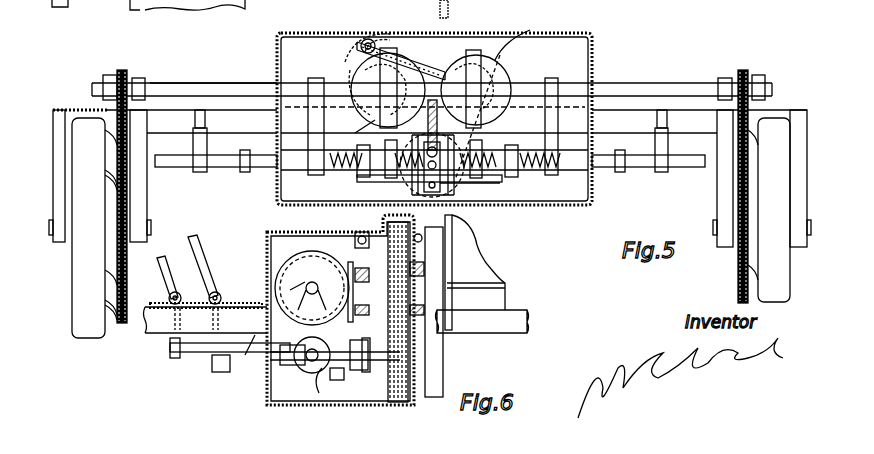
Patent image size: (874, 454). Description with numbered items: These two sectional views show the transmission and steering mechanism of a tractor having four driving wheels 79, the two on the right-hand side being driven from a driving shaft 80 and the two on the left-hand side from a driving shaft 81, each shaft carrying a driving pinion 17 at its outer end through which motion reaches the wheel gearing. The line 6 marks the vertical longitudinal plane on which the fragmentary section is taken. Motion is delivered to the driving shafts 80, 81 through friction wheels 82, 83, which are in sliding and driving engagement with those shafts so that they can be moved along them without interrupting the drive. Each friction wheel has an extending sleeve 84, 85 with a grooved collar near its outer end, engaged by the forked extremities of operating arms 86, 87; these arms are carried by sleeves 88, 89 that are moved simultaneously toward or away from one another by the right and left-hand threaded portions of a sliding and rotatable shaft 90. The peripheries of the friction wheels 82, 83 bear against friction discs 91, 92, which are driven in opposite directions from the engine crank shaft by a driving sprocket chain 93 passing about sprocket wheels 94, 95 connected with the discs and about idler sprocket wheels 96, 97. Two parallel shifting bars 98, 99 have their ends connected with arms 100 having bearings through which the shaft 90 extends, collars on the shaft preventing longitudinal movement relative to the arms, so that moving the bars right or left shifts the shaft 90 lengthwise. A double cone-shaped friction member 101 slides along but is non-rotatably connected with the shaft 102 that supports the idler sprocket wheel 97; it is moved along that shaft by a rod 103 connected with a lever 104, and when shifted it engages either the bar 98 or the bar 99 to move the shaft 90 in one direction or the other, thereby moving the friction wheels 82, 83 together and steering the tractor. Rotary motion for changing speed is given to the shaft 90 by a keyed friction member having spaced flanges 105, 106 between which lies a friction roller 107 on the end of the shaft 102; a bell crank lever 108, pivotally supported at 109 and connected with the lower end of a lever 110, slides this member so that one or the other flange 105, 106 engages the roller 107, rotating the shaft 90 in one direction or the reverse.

In FIG. 5, the section line 6 is at (440, 21).
In FIG. 5, the driving pinion 17 is at (120, 72).
In FIG. 5, the driving wheel 79 is at (80, 120).
In FIG. 5, the driving shaft 80 is at (712, 83).
In FIG. 5, the driving shaft 81 is at (178, 83).
In FIG. 6, the driving shaft 81 is at (310, 284).
In FIG. 5, the friction wheel 82 is at (500, 55).
In FIG. 5, the friction wheel 83 is at (416, 46).
In FIG. 6, the friction wheel 83 is at (310, 264).
In FIG. 5, the extending sleeve 84 is at (527, 83).
In FIG. 5, the extending sleeve 85 is at (353, 82).
In FIG. 5, the operating arm 86 is at (558, 122).
In FIG. 5, the operating arm 87 is at (308, 122).
In FIG. 5, the sleeve 88 is at (565, 172).
In FIG. 5, the sleeve 89 is at (262, 168).
In FIG. 5, the sliding and rotatable shaft 90 is at (648, 168).
In FIG. 6, the sliding and rotatable shaft 90 is at (285, 378).
In FIG. 5, the friction disc 91 is at (505, 60).
In FIG. 5, the friction disc 92 is at (372, 130).
In FIG. 6, the friction disc 92 is at (350, 264).
In FIG. 5, the driving sprocket chain 93 is at (478, 184).
In FIG. 6, the driving sprocket chain 93 is at (408, 267).
In FIG. 5, the sprocket wheel 94 is at (440, 135).
In FIG. 5, the sprocket wheel 95 is at (375, 112).
In FIG. 5, the idler sprocket wheel 96 is at (353, 45).
In FIG. 5, the idler sprocket wheel 97 is at (455, 186).
In FIG. 5, the shifting bar 98 is at (518, 170).
In FIG. 6, the shifting bar 98 is at (392, 400).
In FIG. 5, the shifting bar 99 is at (372, 180).
In FIG. 6, the shifting bar 99 is at (355, 376).
In FIG. 5, the arm 100 is at (358, 160).
In FIG. 6, the arm 100 is at (382, 343).
In FIG. 6, the double cone-shaped friction member 101 is at (358, 372).
In FIG. 6, the shaft 102 is at (392, 346).
In FIG. 6, the rod 103 is at (250, 358).
In FIG. 6, the lever 104 is at (165, 278).
In FIG. 5, the friction flange 105 is at (415, 184).
In FIG. 6, the friction flange 105 is at (310, 375).
In FIG. 5, the friction flange 106 is at (462, 140).
In FIG. 6, the friction roller 107 is at (326, 395).
In FIG. 6, the bell crank lever 108 is at (247, 323).
In FIG. 6, the pivot 109 is at (215, 372).
In FIG. 6, the lever 110 is at (205, 262).